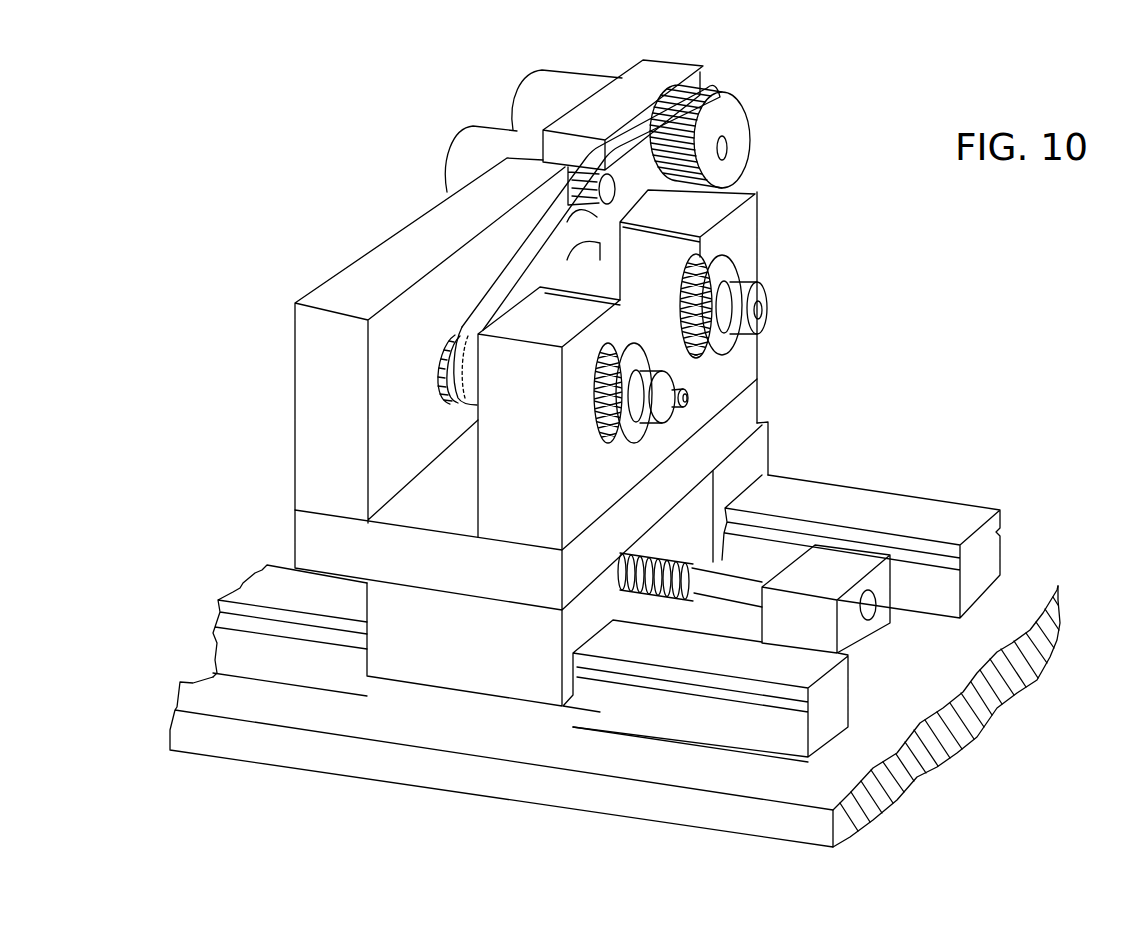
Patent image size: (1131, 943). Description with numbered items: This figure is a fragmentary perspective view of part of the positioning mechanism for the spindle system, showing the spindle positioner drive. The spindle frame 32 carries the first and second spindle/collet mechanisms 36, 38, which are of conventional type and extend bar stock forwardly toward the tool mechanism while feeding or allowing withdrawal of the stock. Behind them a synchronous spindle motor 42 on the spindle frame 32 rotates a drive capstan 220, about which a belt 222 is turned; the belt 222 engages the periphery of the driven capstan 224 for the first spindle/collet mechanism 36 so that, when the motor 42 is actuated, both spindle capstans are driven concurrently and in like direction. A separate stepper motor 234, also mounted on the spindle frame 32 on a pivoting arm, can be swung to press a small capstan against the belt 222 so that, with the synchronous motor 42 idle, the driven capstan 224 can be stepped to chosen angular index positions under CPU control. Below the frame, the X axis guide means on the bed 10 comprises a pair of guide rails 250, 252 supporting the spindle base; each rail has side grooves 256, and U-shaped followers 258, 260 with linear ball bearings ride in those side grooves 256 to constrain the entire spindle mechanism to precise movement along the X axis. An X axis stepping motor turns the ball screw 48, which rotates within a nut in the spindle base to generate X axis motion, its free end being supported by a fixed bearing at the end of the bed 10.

The bed 10 is at (677, 813).
The spindle frame 32 is at (673, 63).
The first spindle/collet mechanism 36 is at (610, 443).
The second spindle/collet mechanism 38 is at (740, 263).
The spindle motor 42 is at (525, 88).
The ball screw 48 is at (655, 600).
The drive capstan 220 is at (737, 123).
The belt 222 is at (707, 92).
The driven capstan 224 is at (440, 395).
The stepper motor 234 is at (450, 137).
The guide rail 250 is at (922, 513).
The guide rail 252 is at (712, 658).
The side grooves 256 is at (298, 632).
The U-shaped follower 258 is at (768, 447).
The U-shaped follower 260 is at (468, 668).